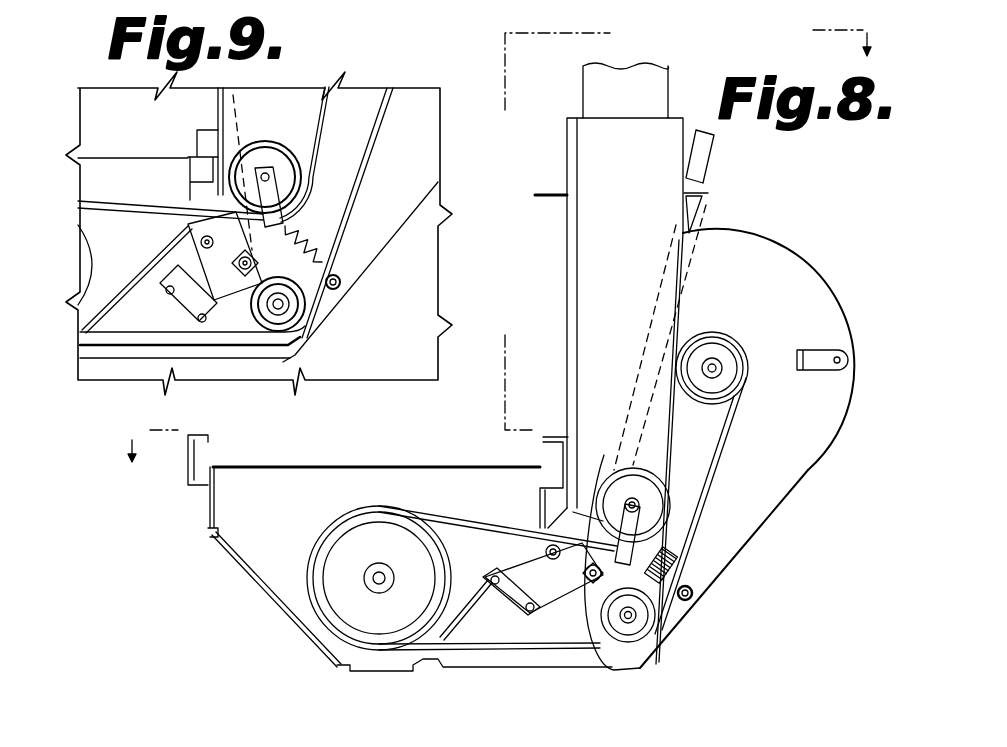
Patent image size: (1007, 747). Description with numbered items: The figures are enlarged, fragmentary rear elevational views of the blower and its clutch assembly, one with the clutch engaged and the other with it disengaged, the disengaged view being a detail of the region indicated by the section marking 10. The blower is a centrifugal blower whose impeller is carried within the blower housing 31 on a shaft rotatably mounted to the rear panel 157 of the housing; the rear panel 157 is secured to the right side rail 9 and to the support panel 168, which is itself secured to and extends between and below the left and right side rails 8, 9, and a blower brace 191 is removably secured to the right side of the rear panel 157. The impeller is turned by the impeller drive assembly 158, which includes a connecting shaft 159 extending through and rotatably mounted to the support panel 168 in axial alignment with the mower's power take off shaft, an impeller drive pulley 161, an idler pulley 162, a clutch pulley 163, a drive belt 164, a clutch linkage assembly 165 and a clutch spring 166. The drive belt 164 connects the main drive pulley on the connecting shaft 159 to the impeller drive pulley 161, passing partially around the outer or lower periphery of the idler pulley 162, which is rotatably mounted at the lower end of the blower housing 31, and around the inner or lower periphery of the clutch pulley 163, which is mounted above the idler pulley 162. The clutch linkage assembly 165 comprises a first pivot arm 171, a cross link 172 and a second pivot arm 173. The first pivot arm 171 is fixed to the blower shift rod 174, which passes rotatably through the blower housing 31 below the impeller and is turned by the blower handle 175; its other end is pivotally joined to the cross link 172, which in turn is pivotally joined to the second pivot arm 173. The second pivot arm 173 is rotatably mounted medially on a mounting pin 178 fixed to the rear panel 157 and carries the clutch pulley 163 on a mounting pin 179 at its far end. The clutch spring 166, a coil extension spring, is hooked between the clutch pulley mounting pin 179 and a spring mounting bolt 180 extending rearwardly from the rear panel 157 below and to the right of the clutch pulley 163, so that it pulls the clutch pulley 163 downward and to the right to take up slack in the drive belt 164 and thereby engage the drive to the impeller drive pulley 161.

In FIG. 8, the left side rail 8 is at (188, 479).
In FIG. 9, the right side rail 9 is at (197, 131).
In FIG. 8, the right side rail 9 is at (558, 432).
In FIG. 8, the section line 10 is at (504, 247).
In FIG. 8, the blower housing 31 is at (806, 476).
In FIG. 8, the rear panel 157 is at (773, 254).
In FIG. 8, the impeller drive assembly 158 is at (575, 668).
In FIG. 8, the connecting shaft 159 is at (384, 573).
In FIG. 8, the impeller drive pulley 161 is at (721, 355).
In FIG. 9, the idler pulley 162 is at (286, 313).
In FIG. 8, the idler pulley 162 is at (645, 628).
In FIG. 9, the clutch pulley 163 is at (268, 156).
In FIG. 8, the clutch pulley 163 is at (623, 494).
In FIG. 9, the drive belt 164 is at (374, 160).
In FIG. 8, the drive belt 164 is at (740, 442).
In FIG. 8, the clutch linkage assembly 165 is at (519, 632).
In FIG. 9, the clutch spring 166 is at (318, 238).
In FIG. 8, the clutch spring 166 is at (678, 554).
In FIG. 9, the support panel 168 is at (86, 183).
In FIG. 8, the support panel 168 is at (273, 592).
In FIG. 9, the first pivot arm 171 is at (233, 318).
In FIG. 8, the first pivot arm 171 is at (556, 607).
In FIG. 9, the cross link 172 is at (164, 310).
In FIG. 8, the cross link 172 is at (501, 603).
In FIG. 9, the second pivot arm 173 is at (185, 265).
In FIG. 8, the second pivot arm 173 is at (516, 566).
In FIG. 8, the blower shift rod 174 is at (622, 580).
In FIG. 9, the blower handle 175 is at (238, 100).
In FIG. 8, the blower handle 175 is at (648, 312).
In FIG. 8, the mounting pin 178 is at (540, 532).
In FIG. 8, the mounting pin, bolt or screw 179 is at (642, 505).
In FIG. 9, the spring mounting pin, bolt or screw 180 is at (345, 283).
In FIG. 8, the spring mounting pin, bolt or screw 180 is at (694, 599).
In FIG. 8, the blower brace 191 is at (820, 350).